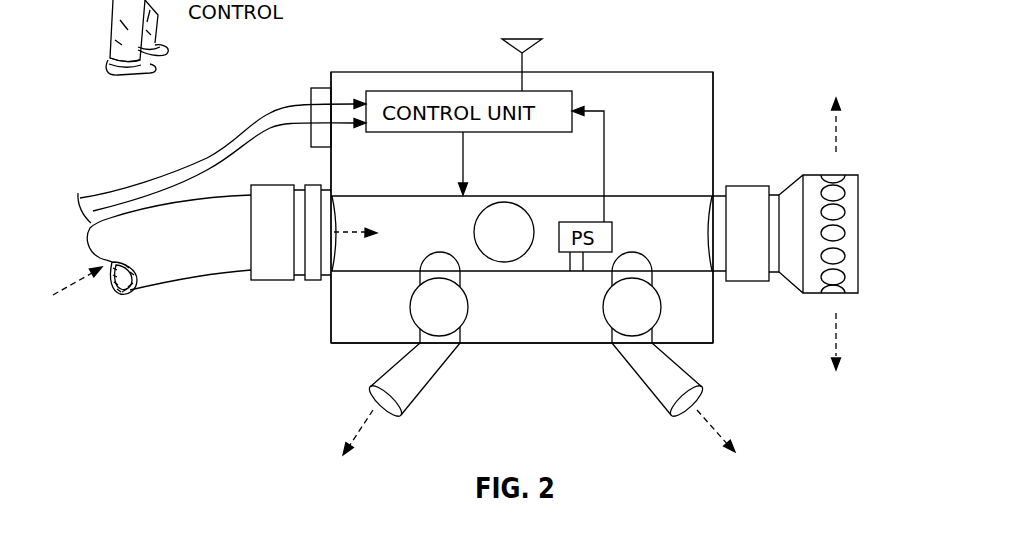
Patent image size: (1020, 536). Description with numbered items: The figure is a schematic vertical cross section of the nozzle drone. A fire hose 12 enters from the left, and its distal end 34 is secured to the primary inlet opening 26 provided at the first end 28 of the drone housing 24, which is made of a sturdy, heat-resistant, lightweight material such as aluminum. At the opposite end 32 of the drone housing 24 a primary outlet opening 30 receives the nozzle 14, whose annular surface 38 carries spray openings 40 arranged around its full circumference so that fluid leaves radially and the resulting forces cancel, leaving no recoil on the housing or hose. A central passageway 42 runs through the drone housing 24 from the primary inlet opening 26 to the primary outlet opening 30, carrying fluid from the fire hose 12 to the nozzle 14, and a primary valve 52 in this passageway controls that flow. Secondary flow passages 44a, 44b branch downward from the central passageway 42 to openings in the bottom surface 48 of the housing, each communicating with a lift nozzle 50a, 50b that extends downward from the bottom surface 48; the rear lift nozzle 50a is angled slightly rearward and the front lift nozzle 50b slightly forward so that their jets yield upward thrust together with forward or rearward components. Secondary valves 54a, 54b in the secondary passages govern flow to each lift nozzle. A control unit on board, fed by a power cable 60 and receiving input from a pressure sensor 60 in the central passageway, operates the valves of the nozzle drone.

The fire hose 12 is at (168, 270).
The nozzle 14 is at (752, 175).
The drone housing 24 is at (644, 60).
The primary inlet opening 26 is at (330, 258).
The first end 28 is at (331, 167).
The primary outlet opening 30 is at (710, 258).
The opposite end 32 is at (713, 98).
The distal end of the fire hose 34 is at (297, 258).
The annular surface 38 is at (858, 174).
The spray openings 40 is at (835, 273).
The central passageway 42 is at (368, 195).
The secondary flow passage 44a is at (423, 276).
The secondary flow passage 44b is at (652, 275).
The bottom surface 48 is at (525, 343).
The rear lift nozzle 50a is at (413, 392).
The front lift nozzle 50b is at (645, 383).
The primary valve 52 is at (504, 202).
The secondary valve 54a is at (468, 307).
The secondary valve 54b is at (603, 307).
The pressure sensor 60 is at (251, 127).